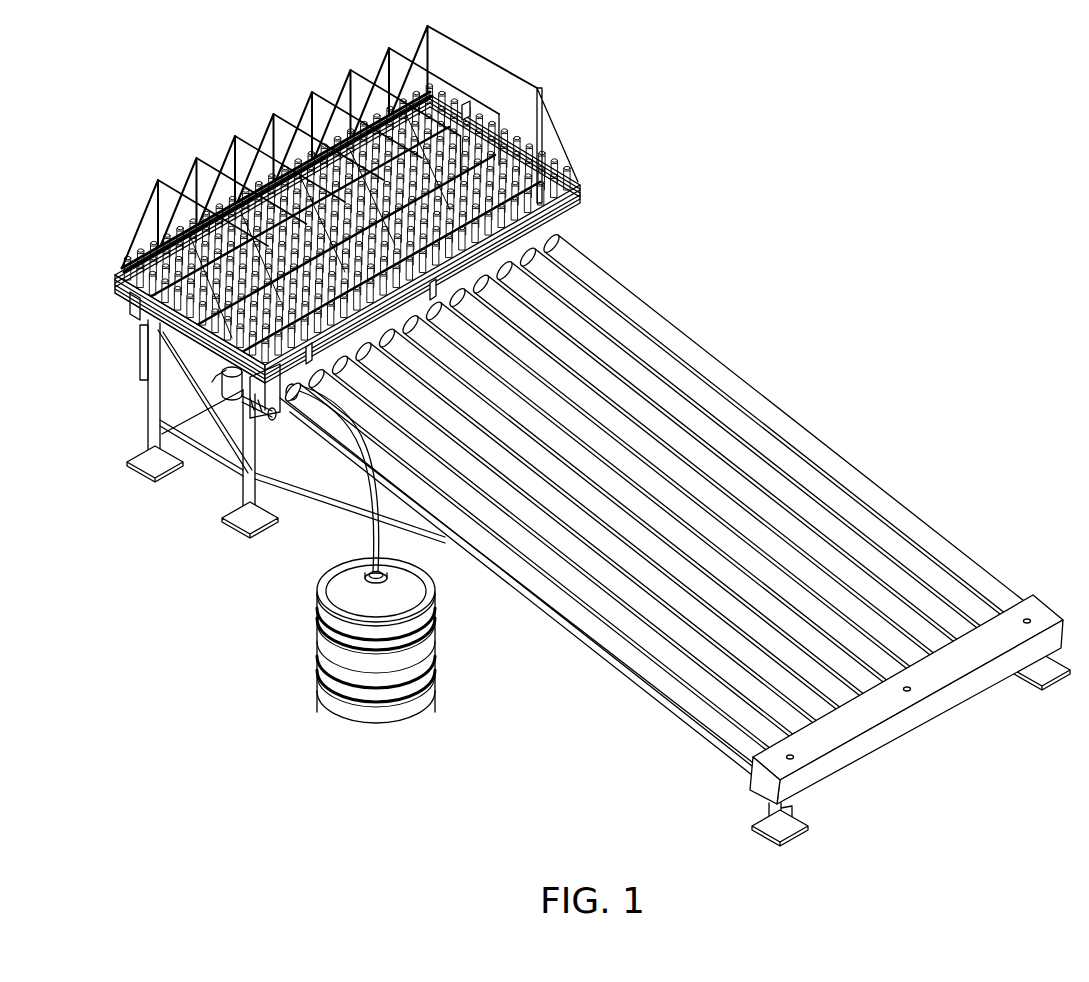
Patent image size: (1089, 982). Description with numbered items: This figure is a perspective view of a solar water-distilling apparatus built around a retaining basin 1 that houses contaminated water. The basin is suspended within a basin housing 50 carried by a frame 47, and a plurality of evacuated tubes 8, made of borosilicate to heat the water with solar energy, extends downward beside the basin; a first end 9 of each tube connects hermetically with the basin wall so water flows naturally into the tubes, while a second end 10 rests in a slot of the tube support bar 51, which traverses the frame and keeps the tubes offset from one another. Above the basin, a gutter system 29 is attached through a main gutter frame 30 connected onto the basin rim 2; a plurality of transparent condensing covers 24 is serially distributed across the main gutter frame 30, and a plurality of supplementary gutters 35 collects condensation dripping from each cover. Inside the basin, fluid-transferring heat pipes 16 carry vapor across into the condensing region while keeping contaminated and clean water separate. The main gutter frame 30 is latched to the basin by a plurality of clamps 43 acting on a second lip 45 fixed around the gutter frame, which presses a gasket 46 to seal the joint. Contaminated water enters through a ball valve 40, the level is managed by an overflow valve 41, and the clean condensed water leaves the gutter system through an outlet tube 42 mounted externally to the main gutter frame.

The retaining basin 1 is at (108, 284).
The basin rim 2 is at (124, 288).
The plurality of evacuated tubes 8 is at (700, 340).
The first end 9 is at (600, 268).
The second end 10 is at (1012, 604).
The fluid-transferring heat pipes 16 is at (214, 262).
The plurality of transparent condensing covers 24 is at (226, 155).
The gutter system 29 is at (588, 185).
The main gutter frame 30 is at (584, 192).
The plurality of supplementary gutters 35 is at (196, 225).
The ball valve 40 is at (250, 452).
The overflow valve 41 is at (228, 398).
The outlet tube 42 is at (282, 408).
The plurality of clamps 43 is at (478, 102).
The second lip 45 is at (124, 266).
The gasket 46 is at (566, 237).
The frame 47 is at (232, 530).
The basin housing 50 is at (128, 300).
The tube support bar 51 is at (748, 778).